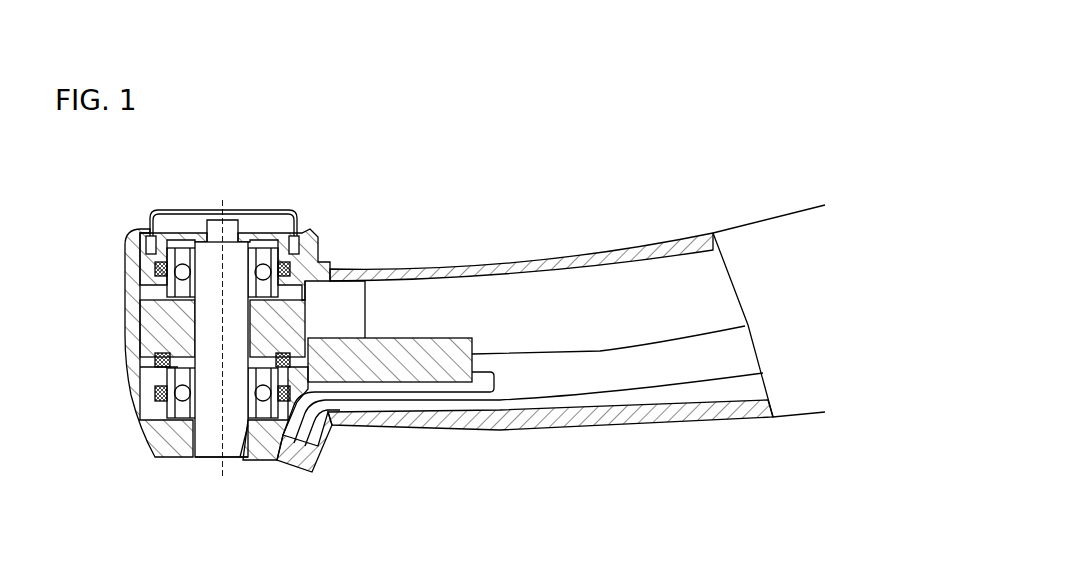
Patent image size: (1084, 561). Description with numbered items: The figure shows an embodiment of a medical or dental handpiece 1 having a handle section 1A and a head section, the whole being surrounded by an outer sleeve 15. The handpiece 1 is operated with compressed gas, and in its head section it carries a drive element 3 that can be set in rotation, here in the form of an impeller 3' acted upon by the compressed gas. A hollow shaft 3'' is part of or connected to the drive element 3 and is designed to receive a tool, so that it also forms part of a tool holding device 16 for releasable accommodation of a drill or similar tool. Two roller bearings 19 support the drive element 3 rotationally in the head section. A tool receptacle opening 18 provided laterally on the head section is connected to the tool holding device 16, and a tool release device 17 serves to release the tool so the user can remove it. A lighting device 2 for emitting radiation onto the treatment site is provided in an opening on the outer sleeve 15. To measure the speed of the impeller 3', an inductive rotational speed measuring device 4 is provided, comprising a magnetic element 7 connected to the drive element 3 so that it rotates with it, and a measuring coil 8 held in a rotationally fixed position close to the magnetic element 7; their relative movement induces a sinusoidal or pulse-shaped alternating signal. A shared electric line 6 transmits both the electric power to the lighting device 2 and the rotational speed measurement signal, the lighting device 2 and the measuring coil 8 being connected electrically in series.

The medical or dental handpiece 1 is at (524, 177).
The handle section 1A is at (583, 232).
The lighting device 2 is at (292, 477).
The drive element 3 is at (423, 341).
The impeller 3' is at (194, 329).
The hollow shaft 3'' is at (227, 365).
The rotational speed measuring device 4 is at (330, 318).
The shared electric line 6 is at (412, 415).
The magnetic element 7 is at (165, 363).
The measuring coil 8 is at (431, 345).
The outer sleeve 15 is at (692, 240).
The tool holding device 16 is at (208, 475).
The tool release device 17 is at (178, 205).
The tool receptacle opening 18 is at (278, 200).
The roller bearings 19 is at (292, 242).